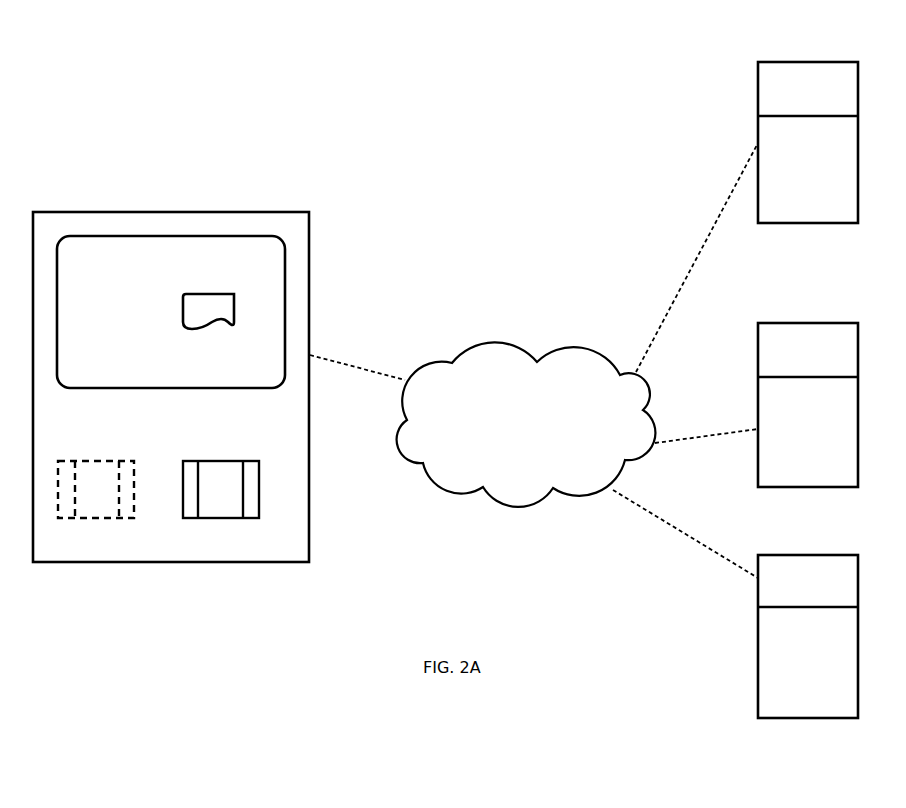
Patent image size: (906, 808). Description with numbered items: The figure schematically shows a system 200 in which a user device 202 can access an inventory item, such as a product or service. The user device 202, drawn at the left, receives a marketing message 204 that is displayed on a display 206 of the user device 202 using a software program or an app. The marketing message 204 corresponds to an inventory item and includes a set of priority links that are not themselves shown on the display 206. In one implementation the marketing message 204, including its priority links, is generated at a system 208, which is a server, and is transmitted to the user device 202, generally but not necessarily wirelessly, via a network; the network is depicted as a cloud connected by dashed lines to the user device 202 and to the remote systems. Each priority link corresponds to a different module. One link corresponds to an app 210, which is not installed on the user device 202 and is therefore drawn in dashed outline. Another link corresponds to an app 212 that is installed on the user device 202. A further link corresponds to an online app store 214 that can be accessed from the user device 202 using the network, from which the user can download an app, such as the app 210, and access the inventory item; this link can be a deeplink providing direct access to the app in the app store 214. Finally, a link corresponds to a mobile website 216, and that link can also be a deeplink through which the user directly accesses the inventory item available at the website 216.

The system 200 is at (540, 66).
The user device 202 is at (191, 363).
The marketing message 204 is at (231, 305).
The display 206 is at (285, 301).
The system (server) 208 is at (812, 121).
The app 210 is at (109, 469).
The app 212 is at (244, 532).
The online app store 214 is at (812, 384).
The mobile website 216 is at (808, 615).